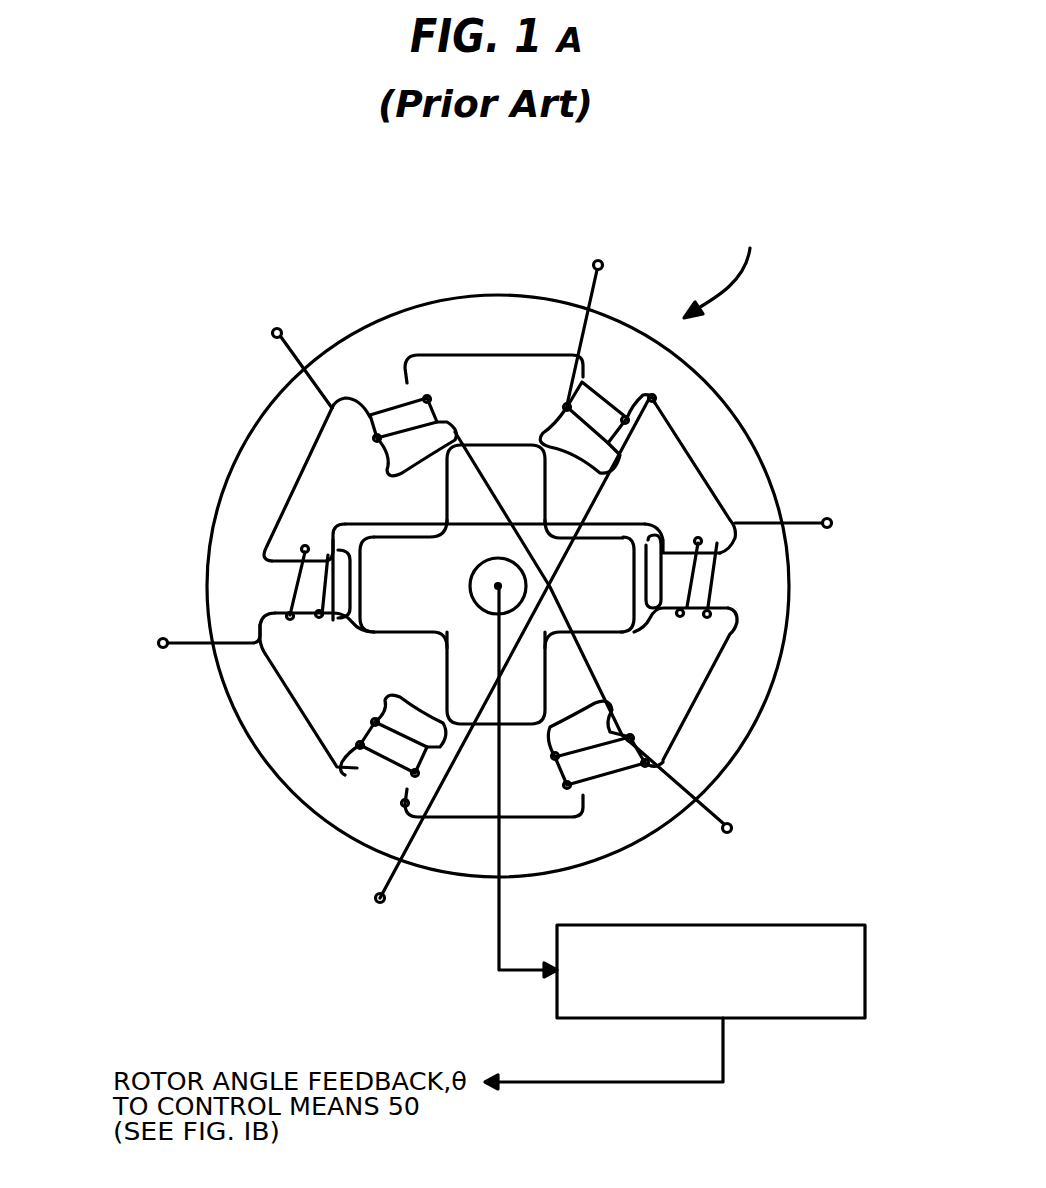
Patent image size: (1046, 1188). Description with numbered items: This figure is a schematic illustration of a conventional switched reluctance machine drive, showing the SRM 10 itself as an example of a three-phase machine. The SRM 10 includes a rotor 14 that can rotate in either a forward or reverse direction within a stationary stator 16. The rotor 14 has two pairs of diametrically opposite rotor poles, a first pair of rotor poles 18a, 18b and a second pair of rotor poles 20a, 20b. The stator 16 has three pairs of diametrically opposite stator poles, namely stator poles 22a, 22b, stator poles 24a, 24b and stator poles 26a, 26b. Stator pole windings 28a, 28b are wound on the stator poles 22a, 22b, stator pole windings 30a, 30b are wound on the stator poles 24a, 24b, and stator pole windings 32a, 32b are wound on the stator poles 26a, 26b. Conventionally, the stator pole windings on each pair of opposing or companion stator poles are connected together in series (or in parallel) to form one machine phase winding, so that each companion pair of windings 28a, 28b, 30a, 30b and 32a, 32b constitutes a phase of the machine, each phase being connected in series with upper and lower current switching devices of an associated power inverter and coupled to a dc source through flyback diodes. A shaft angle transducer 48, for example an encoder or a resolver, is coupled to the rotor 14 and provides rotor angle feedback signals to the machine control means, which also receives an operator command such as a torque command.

The SRM 10 is at (729, 267).
The rotor 14 is at (620, 618).
The stator 16 is at (272, 442).
The rotor pole 18a is at (395, 620).
The rotor pole 18b is at (620, 548).
The rotor pole 20a is at (502, 455).
The rotor pole 20b is at (484, 716).
The stator pole 22a is at (275, 553).
The stator pole 22b is at (730, 520).
The stator pole 24a is at (423, 355).
The stator pole 24b is at (602, 825).
The stator pole 26a is at (655, 400).
The stator pole 26b is at (347, 767).
The stator pole winding 28a is at (318, 618).
The stator pole winding 28b is at (717, 578).
The stator pole winding 30a is at (375, 405).
The stator pole winding 30b is at (660, 755).
The stator pole winding 32a is at (562, 400).
The stator pole winding 32b is at (373, 776).
The shaft angle transducer 48 is at (797, 1020).